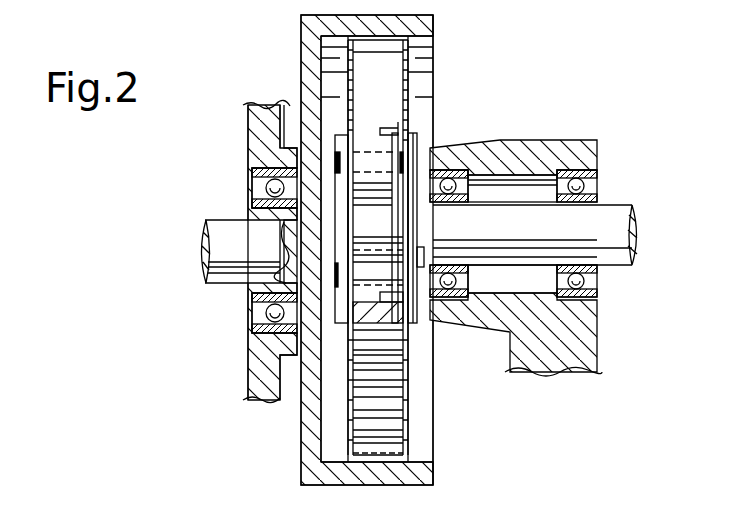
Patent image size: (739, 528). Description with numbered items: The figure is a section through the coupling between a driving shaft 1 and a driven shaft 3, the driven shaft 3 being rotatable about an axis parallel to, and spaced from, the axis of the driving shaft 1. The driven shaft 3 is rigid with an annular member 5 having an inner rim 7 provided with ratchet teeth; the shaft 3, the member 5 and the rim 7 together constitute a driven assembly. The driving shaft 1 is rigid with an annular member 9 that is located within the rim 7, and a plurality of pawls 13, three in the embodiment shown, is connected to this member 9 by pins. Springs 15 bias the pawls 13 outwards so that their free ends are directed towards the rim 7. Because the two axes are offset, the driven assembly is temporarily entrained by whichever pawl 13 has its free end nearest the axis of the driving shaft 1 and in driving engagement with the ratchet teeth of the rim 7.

The driving shaft 1 is at (610, 212).
The driven shaft 3 is at (212, 218).
The annular member 5 is at (423, 475).
The inner rim 7 is at (408, 58).
The annular member 9 is at (413, 330).
The pawls 13 is at (388, 102).
The springs 15 is at (387, 129).